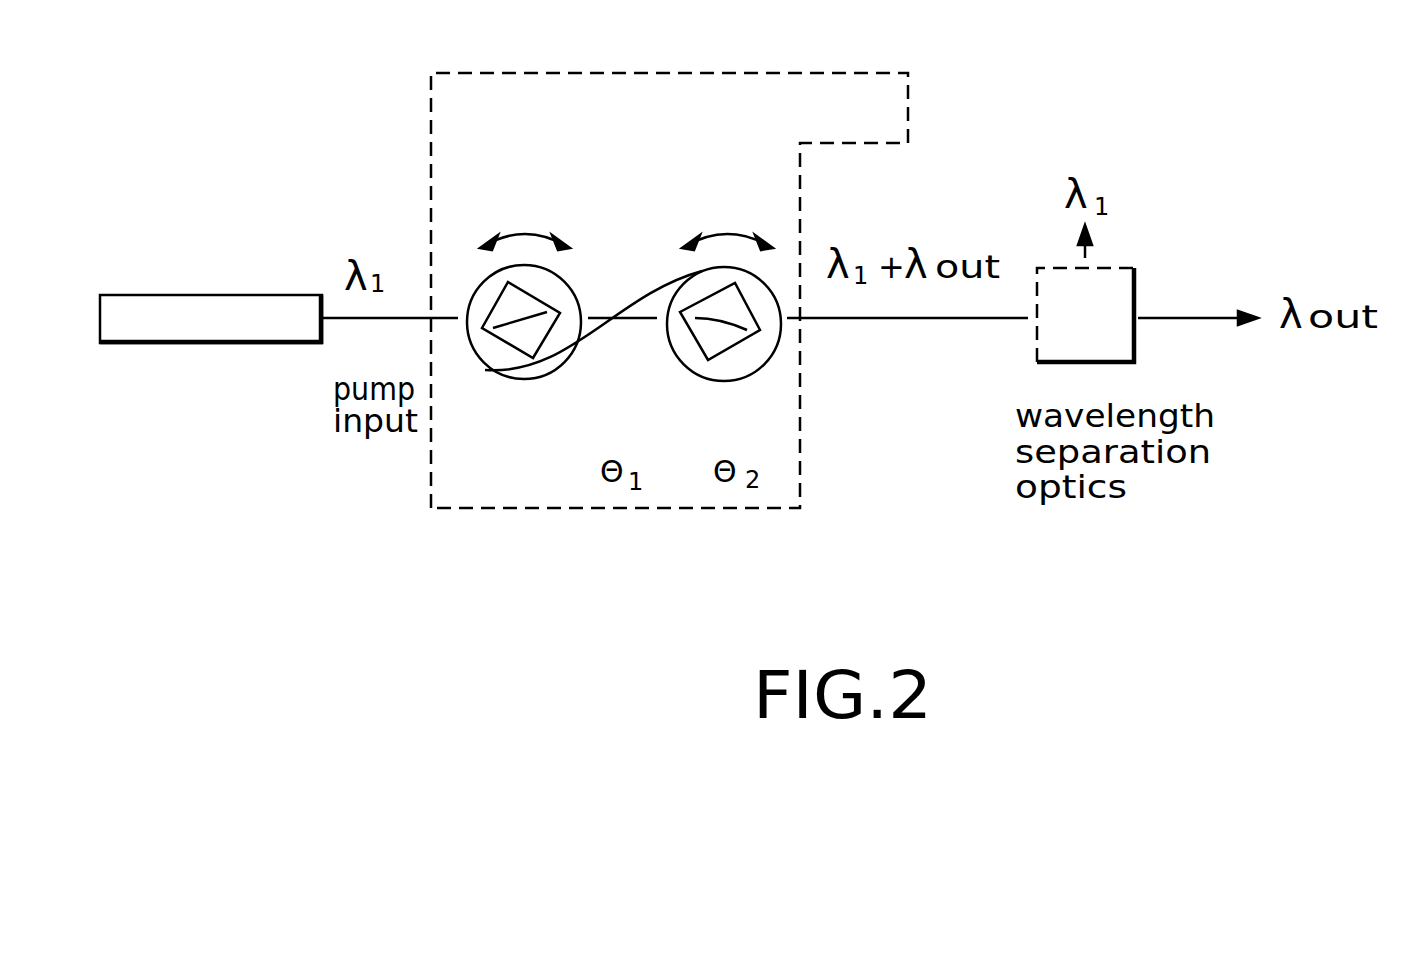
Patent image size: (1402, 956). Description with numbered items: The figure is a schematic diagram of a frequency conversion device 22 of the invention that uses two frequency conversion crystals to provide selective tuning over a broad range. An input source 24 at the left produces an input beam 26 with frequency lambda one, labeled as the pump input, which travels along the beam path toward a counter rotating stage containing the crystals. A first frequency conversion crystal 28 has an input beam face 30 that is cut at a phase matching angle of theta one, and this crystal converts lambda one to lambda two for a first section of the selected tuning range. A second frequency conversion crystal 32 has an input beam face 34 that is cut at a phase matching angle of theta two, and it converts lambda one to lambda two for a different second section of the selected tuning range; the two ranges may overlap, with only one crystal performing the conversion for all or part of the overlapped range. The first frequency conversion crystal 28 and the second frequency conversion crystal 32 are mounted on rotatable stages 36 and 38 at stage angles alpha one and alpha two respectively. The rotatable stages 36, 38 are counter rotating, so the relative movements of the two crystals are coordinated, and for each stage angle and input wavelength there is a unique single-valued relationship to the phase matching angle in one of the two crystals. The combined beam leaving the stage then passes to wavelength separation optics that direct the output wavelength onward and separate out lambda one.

The frequency conversion device 22 is at (875, 197).
The input source 24 is at (210, 295).
The pump input beam 26 is at (347, 261).
The first frequency conversion crystal 28 is at (543, 355).
The input beam face 30 is at (493, 338).
The second frequency conversion crystal 32 is at (720, 348).
The input beam face 34 is at (700, 352).
The rotatable stage 36 is at (520, 228).
The rotatable stage 38 is at (720, 230).